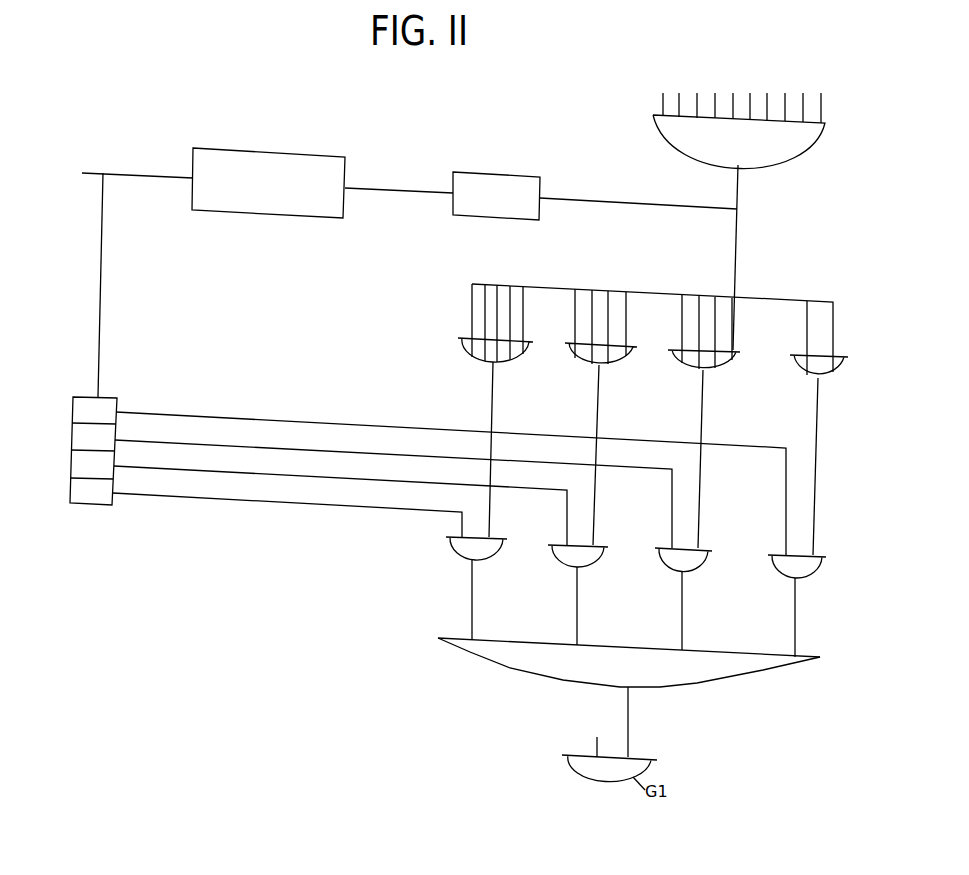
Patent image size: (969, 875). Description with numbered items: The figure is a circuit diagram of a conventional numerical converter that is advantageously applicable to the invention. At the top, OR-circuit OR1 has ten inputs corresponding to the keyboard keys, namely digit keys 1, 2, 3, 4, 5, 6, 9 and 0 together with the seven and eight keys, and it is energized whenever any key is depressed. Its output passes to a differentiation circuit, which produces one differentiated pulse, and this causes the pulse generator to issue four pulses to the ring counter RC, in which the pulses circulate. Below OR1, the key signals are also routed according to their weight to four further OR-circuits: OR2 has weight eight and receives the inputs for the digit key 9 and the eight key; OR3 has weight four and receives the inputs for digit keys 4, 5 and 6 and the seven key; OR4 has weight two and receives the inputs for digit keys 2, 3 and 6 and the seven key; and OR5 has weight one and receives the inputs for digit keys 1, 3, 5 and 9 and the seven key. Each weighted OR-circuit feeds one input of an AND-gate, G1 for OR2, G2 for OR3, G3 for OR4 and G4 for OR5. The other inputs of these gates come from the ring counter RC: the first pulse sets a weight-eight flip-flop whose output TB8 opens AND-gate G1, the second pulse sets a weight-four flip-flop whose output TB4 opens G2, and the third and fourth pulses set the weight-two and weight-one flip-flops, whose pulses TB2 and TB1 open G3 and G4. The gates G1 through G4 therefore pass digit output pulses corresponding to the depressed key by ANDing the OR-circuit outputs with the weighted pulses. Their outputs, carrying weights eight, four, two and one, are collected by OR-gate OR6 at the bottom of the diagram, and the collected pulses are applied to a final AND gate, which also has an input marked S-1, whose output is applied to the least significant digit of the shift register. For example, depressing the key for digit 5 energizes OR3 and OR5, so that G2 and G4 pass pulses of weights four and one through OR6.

The OR-circuit OR1 is at (739, 119).
The OR-circuit OR2 is at (792, 367).
The OR-circuit OR3 is at (682, 362).
The OR-circuit OR4 is at (575, 355).
The OR-circuit OR5 is at (466, 346).
The OR-gate OR6 is at (478, 653).
The AND-gate G1 is at (800, 578).
The AND-gate G2 is at (690, 572).
The AND-gate G3 is at (585, 567).
The AND-gate G4 is at (483, 560).
The ring counter RC is at (72, 488).
The weighted output pulse TB1 is at (287, 504).
The weighted output pulse TB2 is at (340, 496).
The weighted output pulse TB4 is at (393, 484).
The weighted output pulse TB8 is at (451, 473).
The signal S-1 is at (598, 737).
The digit key 1 is at (665, 95).
The digit key 2 is at (679, 96).
The digit key 3 is at (697, 96).
The digit key 4 is at (715, 96).
The digit key 5 is at (733, 97).
The digit key 6 is at (750, 97).
The digit key 9 is at (803, 98).
The digit key 0 is at (821, 99).